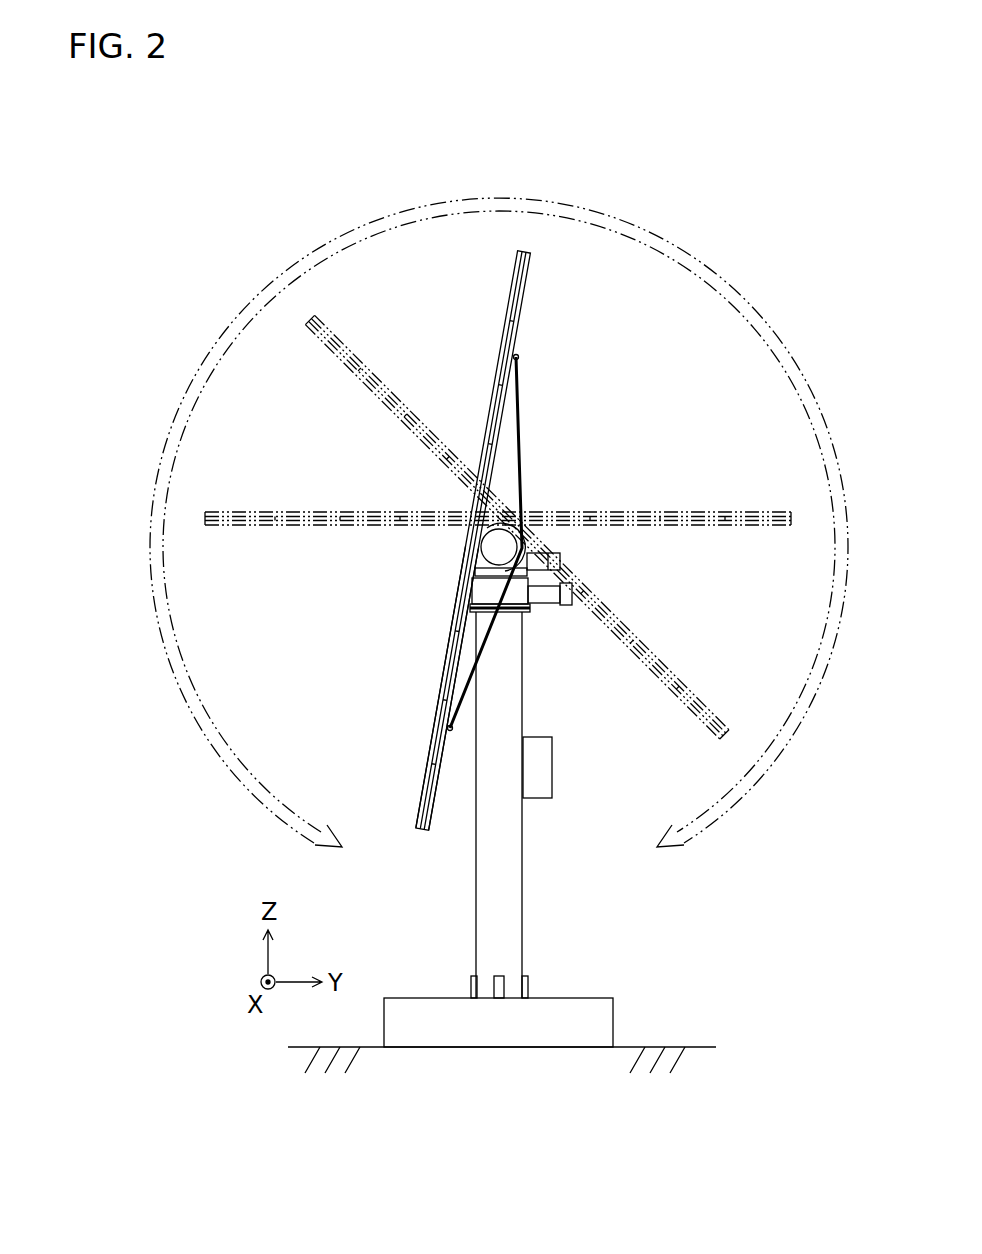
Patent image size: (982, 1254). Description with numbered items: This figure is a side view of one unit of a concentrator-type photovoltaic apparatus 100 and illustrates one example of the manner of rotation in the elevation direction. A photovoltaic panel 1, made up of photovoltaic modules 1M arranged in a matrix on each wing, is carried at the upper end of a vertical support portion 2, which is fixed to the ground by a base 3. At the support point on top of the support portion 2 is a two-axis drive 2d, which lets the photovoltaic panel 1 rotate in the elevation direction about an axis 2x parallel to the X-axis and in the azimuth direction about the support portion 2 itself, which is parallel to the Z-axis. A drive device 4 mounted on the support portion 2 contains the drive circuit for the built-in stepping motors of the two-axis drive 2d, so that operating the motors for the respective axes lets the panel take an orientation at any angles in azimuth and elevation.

The photovoltaic panel 1 is at (556, 316).
The photovoltaic module 1M is at (443, 662).
The support portion 2 is at (522, 865).
The axis 2x is at (490, 546).
The two-axis drive 2d is at (572, 552).
The base 3 is at (429, 998).
The drive device 4 is at (537, 737).
The photovoltaic apparatus 100 is at (648, 893).